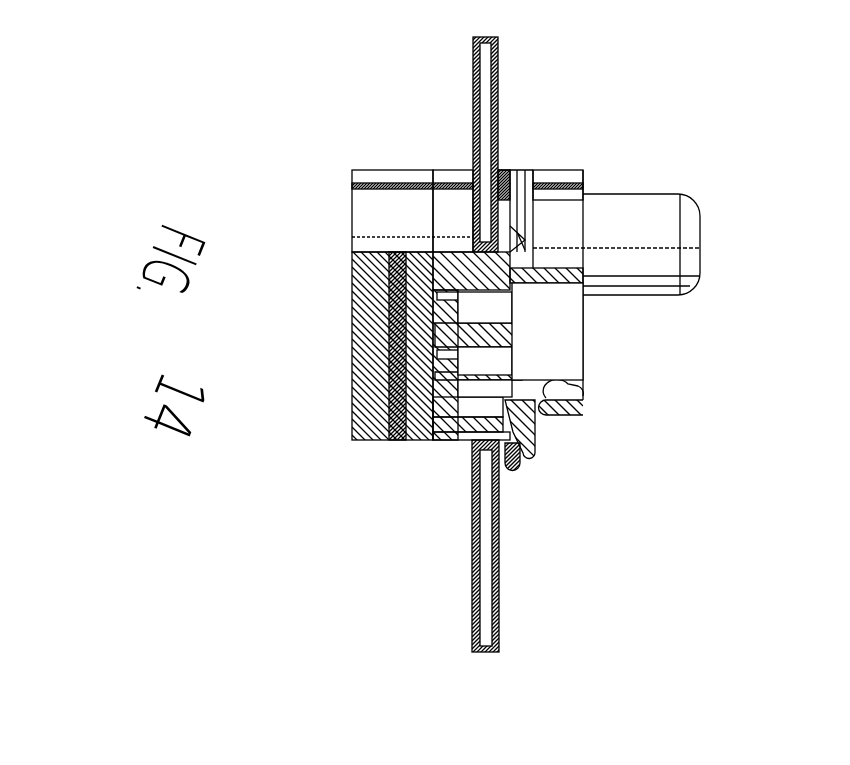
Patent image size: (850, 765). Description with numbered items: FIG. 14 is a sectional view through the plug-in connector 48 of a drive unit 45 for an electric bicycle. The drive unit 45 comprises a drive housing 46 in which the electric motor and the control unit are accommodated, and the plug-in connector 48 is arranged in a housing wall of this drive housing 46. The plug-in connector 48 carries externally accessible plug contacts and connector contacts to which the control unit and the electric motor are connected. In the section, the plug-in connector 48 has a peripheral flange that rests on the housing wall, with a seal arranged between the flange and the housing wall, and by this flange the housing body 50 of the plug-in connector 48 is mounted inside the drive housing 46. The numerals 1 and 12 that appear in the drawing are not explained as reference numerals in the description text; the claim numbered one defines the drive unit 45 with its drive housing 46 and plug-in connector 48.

The electrical connector 1 is at (748, 388).
The contact terminal 12 is at (583, 125).
The drive unit 45 is at (548, 595).
The drive housing 46 is at (582, 497).
The plug-in connector 48 is at (691, 319).
The housing body 50 is at (413, 512).